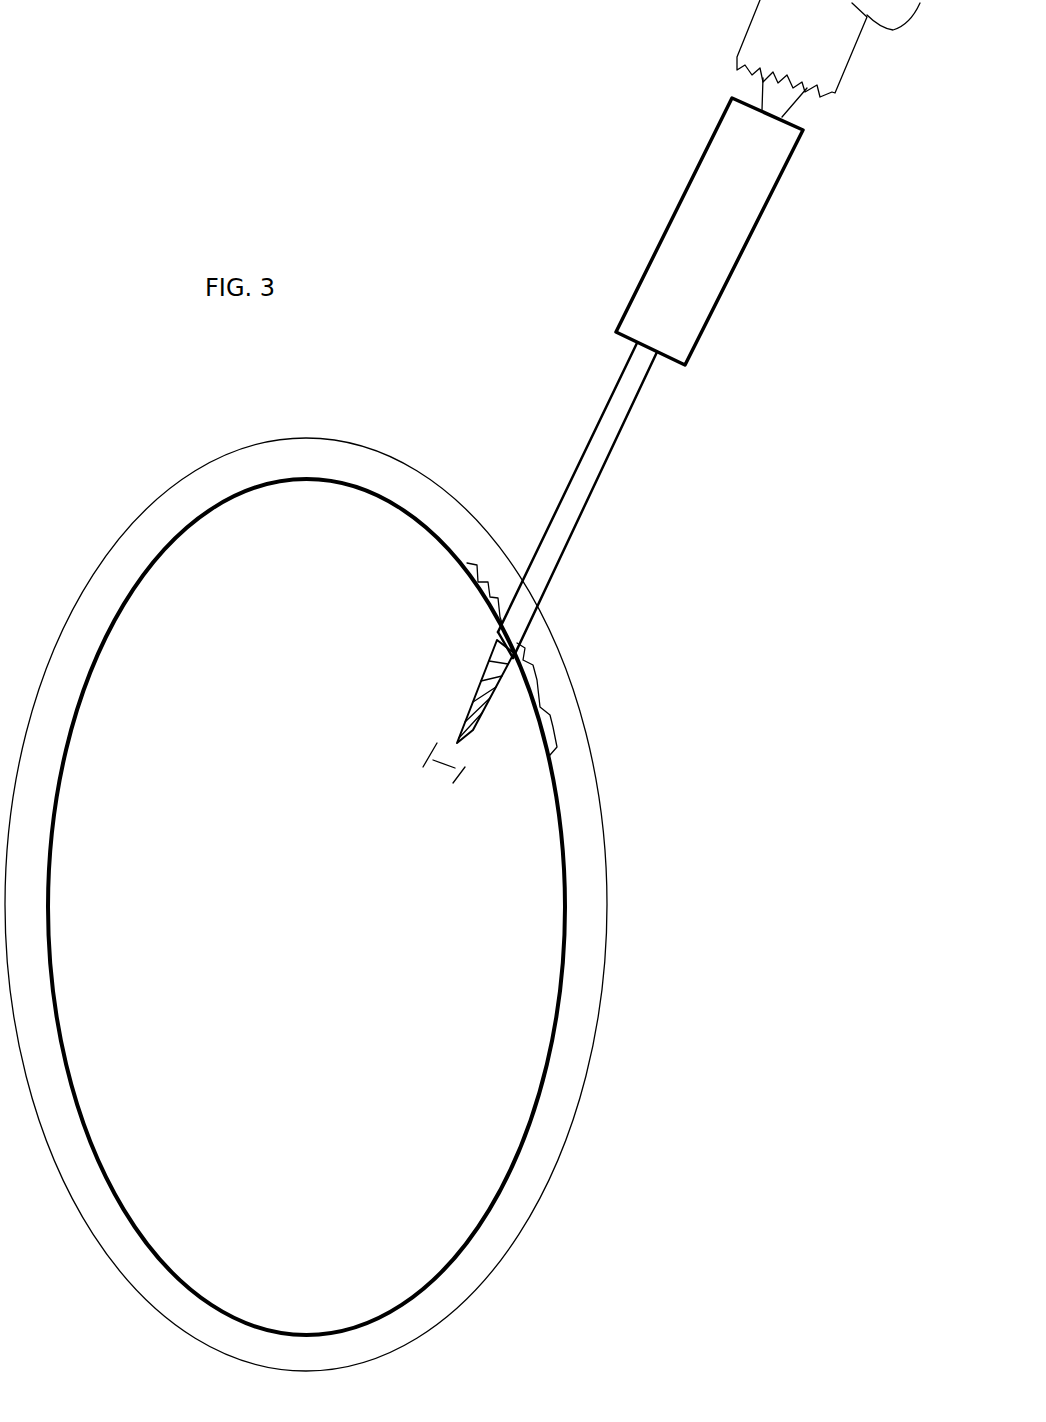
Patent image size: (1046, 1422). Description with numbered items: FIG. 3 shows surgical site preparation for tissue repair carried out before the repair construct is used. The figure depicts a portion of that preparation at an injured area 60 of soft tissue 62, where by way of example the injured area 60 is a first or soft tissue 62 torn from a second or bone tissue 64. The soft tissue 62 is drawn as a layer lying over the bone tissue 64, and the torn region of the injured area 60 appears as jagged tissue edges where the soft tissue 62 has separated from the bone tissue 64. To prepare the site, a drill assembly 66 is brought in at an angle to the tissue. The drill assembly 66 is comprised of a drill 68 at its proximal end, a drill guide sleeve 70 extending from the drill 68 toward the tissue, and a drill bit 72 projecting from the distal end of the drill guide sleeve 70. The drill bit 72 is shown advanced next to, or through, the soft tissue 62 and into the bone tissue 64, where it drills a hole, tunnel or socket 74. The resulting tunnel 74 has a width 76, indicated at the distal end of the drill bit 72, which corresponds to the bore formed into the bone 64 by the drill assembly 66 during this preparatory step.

The injured area 60 is at (488, 578).
The soft tissue 62 is at (585, 792).
The bone tissue 64 is at (538, 900).
The drill assembly 66 is at (592, 240).
The drill 68 is at (762, 27).
The drill guide sleeve 70 is at (610, 397).
The drill bit 72 is at (478, 683).
The tunnel 74 is at (538, 607).
The width 76 is at (440, 777).